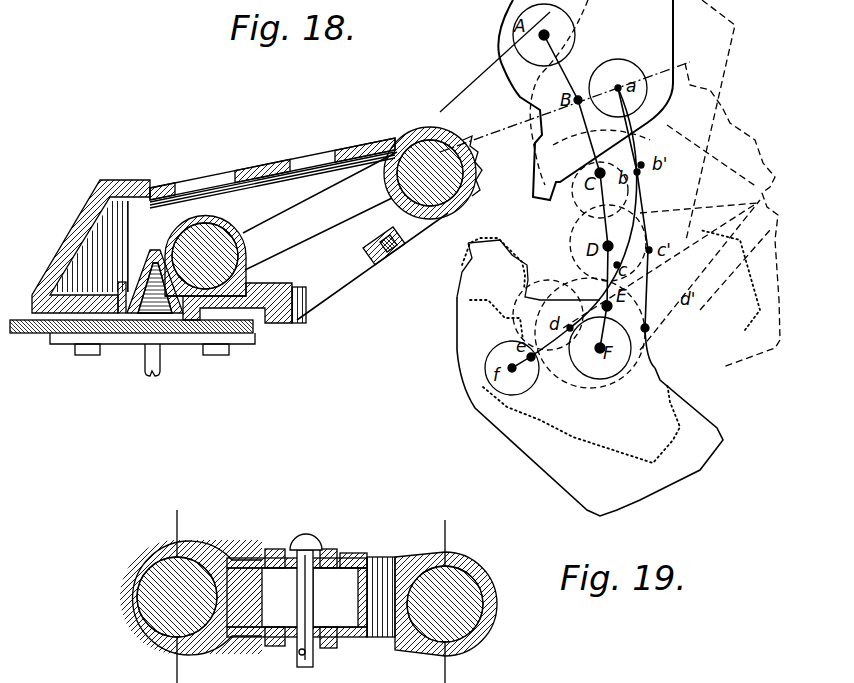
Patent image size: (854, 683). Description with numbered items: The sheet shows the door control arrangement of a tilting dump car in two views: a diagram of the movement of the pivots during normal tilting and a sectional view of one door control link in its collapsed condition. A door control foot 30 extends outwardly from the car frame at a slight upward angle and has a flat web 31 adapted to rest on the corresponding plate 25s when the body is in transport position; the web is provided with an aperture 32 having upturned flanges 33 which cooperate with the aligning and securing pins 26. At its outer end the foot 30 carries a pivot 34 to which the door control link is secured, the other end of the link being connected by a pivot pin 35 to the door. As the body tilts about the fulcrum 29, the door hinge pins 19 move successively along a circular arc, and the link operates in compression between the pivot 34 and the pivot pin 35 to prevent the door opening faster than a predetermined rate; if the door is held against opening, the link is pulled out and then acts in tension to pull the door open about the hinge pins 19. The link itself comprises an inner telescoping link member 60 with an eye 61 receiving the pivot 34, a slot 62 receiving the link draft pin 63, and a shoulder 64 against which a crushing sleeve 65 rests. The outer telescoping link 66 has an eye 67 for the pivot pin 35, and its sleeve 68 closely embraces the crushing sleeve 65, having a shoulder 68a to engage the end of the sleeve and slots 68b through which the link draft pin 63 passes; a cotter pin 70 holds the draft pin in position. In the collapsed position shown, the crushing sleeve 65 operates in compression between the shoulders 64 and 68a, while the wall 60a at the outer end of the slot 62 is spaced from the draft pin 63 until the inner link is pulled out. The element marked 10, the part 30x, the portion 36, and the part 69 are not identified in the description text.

In FIG. 18, the stem 10 is at (155, 377).
In FIG. 18, the door hinge pins 19 is at (573, 400).
In FIG. 18, the plate 25s is at (187, 313).
In FIG. 18, the aligning and securing pins 26 is at (157, 288).
In FIG. 18, the fulcrum 29 is at (210, 258).
In FIG. 18, the door control foot 30 is at (255, 190).
In FIG. 18, the clip 30x is at (392, 252).
In FIG. 18, the flat web 31 is at (52, 305).
In FIG. 18, the aperture 32 is at (124, 290).
In FIG. 18, the upturned flanges 33 is at (116, 287).
In FIG. 18, the pivot 34 is at (440, 150).
In FIG. 19, the pivot 34 is at (150, 575).
In FIG. 18, the pivot pin 35 is at (627, 67).
In FIG. 19, the pivot pin 35 is at (470, 615).
In FIG. 18, the housing portion 36 is at (258, 300).
In FIG. 18, the inner telescoping link member 60 is at (455, 134).
In FIG. 19, the inner telescoping link member 60 is at (240, 632).
In FIG. 19, the wall 60a is at (335, 597).
In FIG. 18, the eye 61 is at (448, 180).
In FIG. 19, the eye 61 is at (130, 617).
In FIG. 19, the slot 62 is at (280, 597).
In FIG. 19, the link draft pin 63 is at (308, 533).
In FIG. 19, the shoulder 64 is at (232, 558).
In FIG. 19, the crushing sleeve 65 is at (268, 550).
In FIG. 19, the outer telescoping link 66 is at (440, 560).
In FIG. 19, the eye 67 is at (482, 582).
In FIG. 19, the sleeve 68 is at (352, 553).
In FIG. 19, the shoulder 68a is at (385, 558).
In FIG. 19, the slots 68b is at (326, 640).
In FIG. 19, the collar 69 is at (332, 550).
In FIG. 19, the cotter pin 70 is at (299, 652).